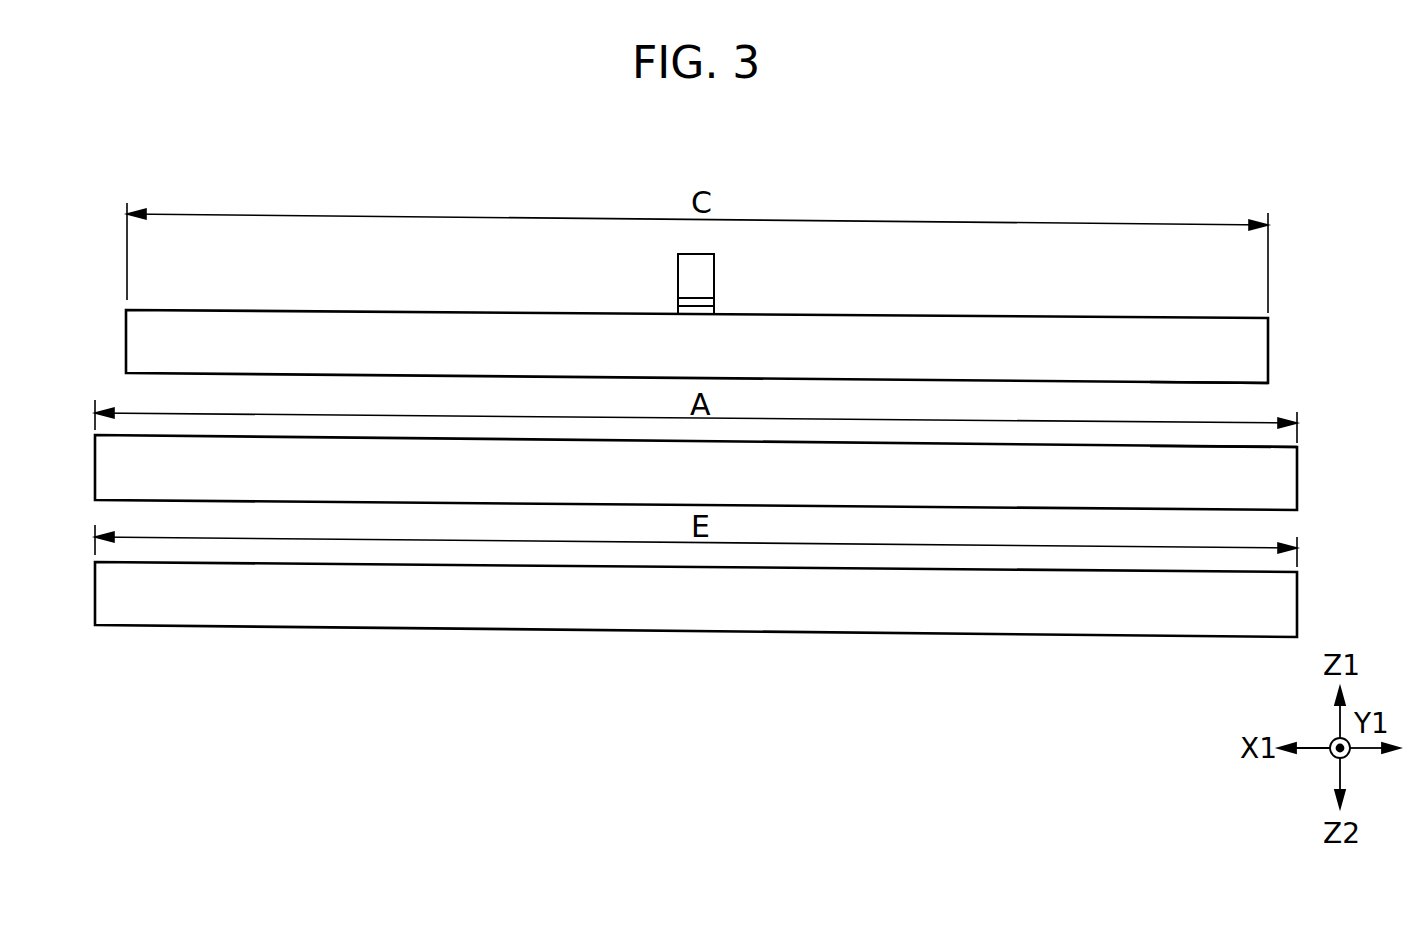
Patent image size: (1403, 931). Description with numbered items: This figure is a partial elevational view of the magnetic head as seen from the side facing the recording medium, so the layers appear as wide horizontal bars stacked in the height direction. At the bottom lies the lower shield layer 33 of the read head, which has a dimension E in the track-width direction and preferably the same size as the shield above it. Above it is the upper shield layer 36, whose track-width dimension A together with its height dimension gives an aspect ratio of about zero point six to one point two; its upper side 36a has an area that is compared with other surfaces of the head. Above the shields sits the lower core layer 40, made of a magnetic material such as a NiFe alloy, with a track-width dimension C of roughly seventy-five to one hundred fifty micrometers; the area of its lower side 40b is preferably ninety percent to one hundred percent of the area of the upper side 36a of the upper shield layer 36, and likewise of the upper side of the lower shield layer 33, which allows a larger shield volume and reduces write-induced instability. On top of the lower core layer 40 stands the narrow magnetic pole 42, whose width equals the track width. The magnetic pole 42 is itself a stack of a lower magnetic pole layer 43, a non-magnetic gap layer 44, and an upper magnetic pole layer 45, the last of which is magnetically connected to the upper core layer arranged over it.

The lower shield layer 33 is at (1280, 603).
The upper shield layer 36 is at (1275, 490).
The upper side of the upper shield layer 36a is at (1240, 445).
The lower core layer 40 is at (1257, 347).
The lower side of the lower core layer 40b is at (1232, 383).
The magnetic pole 42 is at (769, 273).
The lower magnetic pole layer 43 is at (743, 302).
The non-magnetic gap layer 44 is at (713, 300).
The upper magnetic pole layer 45 is at (705, 267).